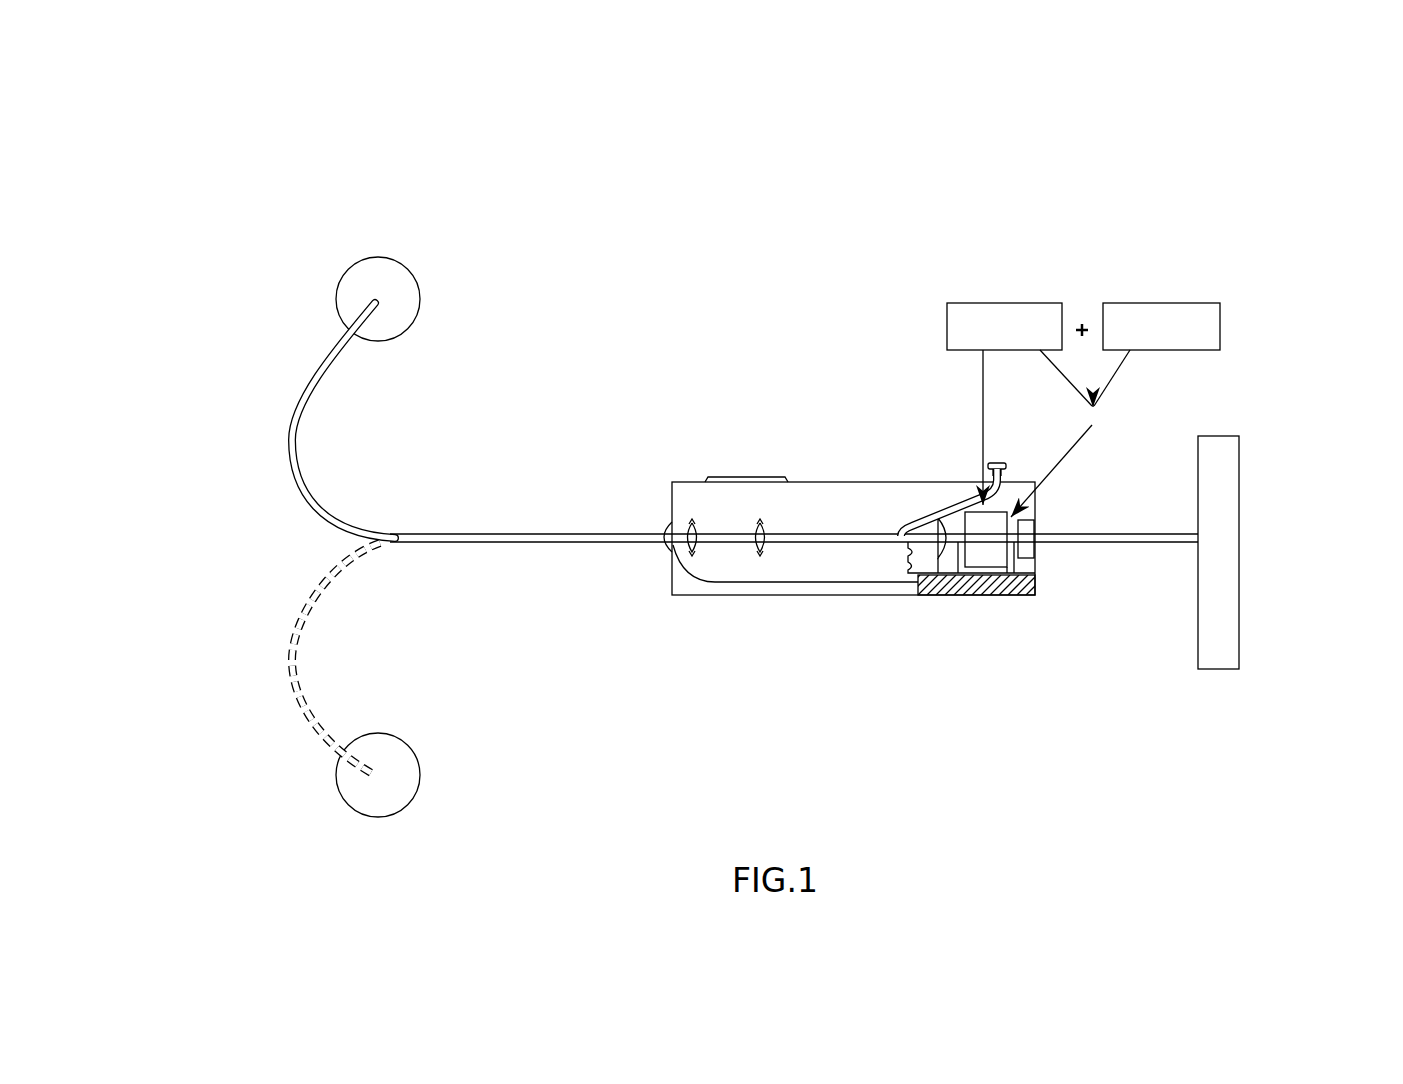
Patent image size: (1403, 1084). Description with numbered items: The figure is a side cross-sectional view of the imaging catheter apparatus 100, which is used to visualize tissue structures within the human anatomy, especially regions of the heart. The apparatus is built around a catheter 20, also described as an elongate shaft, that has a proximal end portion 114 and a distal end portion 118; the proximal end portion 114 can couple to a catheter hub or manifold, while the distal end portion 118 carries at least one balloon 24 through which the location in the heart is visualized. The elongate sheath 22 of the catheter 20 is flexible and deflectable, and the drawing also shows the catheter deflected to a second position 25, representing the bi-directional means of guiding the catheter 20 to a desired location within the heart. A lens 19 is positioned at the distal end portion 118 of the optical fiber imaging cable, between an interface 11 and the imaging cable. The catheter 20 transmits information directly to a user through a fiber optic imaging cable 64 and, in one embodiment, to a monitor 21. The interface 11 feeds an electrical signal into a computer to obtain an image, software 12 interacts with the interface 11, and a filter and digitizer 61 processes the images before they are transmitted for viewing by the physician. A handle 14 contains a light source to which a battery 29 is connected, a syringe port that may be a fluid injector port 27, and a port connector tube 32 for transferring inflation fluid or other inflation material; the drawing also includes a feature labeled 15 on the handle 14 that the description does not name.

The imaging catheter apparatus 100 is at (801, 263).
The distal end portion 118 is at (415, 223).
The balloon 24 is at (342, 278).
The elongate sheath 22 is at (310, 365).
The catheter 20 is at (238, 324).
The second position 25 is at (256, 585).
The handle 14 is at (727, 637).
The button 15 is at (773, 470).
The fiber optic imaging cable 64 is at (843, 533).
The lens 19 is at (938, 518).
The port connector tube 32 is at (967, 512).
The interface 11 is at (1035, 503).
The battery 29 is at (955, 596).
The fluid injector port 27 is at (1000, 463).
The filter and digitizer 61 is at (995, 302).
The software 12 is at (1188, 302).
The monitor 21 is at (1240, 537).
The proximal end portion 114 is at (1048, 658).